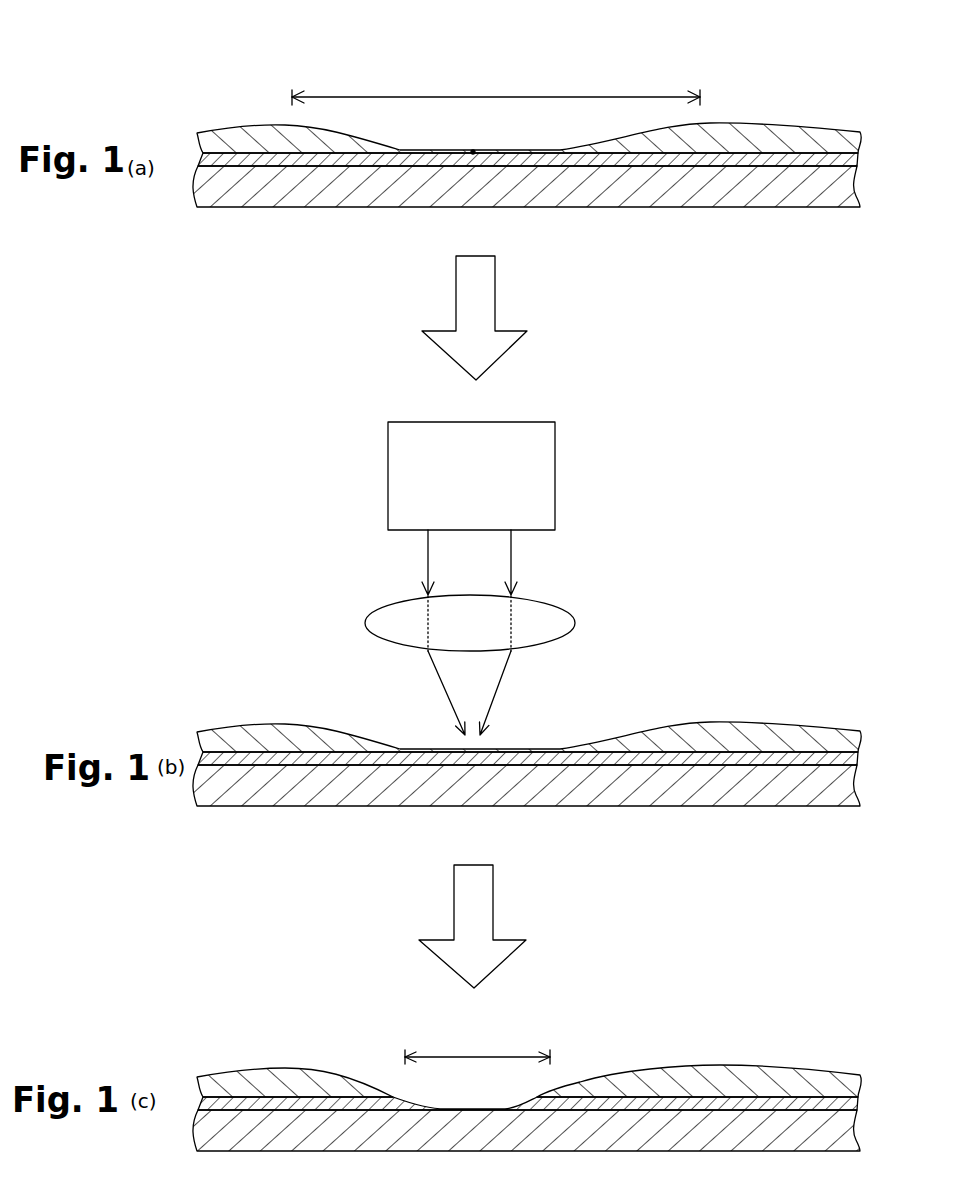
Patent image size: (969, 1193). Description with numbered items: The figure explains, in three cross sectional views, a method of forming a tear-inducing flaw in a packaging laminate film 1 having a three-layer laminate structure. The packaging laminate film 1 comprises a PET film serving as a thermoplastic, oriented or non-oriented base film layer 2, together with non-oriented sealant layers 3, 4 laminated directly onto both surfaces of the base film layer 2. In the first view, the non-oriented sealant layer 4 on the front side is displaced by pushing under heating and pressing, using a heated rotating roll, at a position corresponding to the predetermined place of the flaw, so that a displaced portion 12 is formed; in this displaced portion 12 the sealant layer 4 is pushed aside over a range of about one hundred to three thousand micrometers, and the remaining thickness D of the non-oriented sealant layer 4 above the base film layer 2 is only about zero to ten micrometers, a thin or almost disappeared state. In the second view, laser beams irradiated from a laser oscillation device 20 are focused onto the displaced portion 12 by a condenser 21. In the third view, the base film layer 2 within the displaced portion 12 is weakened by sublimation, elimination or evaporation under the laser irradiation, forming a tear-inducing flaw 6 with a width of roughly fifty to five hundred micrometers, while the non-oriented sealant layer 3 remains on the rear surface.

In FIG. 1A, the packaging laminate film 1 is at (557, 109).
In FIG. 1B, the packaging laminate film 1 is at (557, 708).
In FIG. 1C, the packaging laminate film 1 is at (557, 1053).
In FIG. 1A, the base film layer 2 is at (847, 153).
In FIG. 1B, the base film layer 2 is at (558, 754).
In FIG. 1C, the base film layer 2 is at (847, 1097).
In FIG. 1A, the non-oriented sealant layer 3 is at (836, 186).
In FIG. 1B, the non-oriented sealant layer 3 is at (557, 785).
In FIG. 1C, the non-oriented sealant layer 3 is at (836, 1130).
In FIG. 1A, the non-oriented sealant layer 4 is at (845, 138).
In FIG. 1B, the non-oriented sealant layer 4 is at (557, 724).
In FIG. 1C, the non-oriented sealant layer 4 is at (845, 1082).
In FIG. 1A, the displaced portion 12 is at (470, 97).
In FIG. 1A, the remaining thickness D is at (473, 152).
In FIG. 1B, the laser oscillation device 20 is at (555, 472).
In FIG. 1B, the condenser 21 is at (560, 628).
In FIG. 1C, the tear-inducing flaw 6 is at (480, 1057).